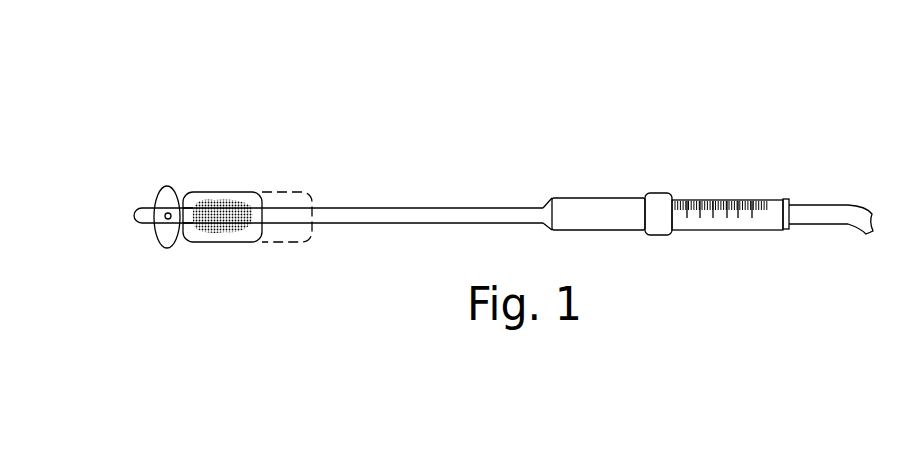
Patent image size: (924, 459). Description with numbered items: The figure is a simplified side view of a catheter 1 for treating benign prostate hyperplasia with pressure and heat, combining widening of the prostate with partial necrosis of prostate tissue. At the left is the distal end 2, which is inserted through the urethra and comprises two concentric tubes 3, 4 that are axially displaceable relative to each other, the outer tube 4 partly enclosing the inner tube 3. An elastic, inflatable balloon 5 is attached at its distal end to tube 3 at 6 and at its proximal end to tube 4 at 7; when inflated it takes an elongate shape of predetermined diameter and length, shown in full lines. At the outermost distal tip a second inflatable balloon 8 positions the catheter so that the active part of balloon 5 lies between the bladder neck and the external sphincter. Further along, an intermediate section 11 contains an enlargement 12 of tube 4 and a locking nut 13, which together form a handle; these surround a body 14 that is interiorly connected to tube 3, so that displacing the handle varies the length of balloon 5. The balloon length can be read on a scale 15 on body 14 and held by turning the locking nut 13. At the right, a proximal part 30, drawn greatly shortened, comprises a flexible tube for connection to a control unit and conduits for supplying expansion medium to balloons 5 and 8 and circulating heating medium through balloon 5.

The catheter 1 is at (452, 143).
The distal end 2 is at (227, 167).
The tube 3 is at (202, 203).
The tube 4 is at (331, 207).
The elastic inflatable balloon 5 is at (223, 243).
The distal attachment point 6 is at (187, 242).
The proximal attachment point 7 is at (265, 243).
The second inflatable balloon 8 is at (158, 246).
The intermediate section 11 is at (665, 147).
The enlargement 12 is at (612, 198).
The locking nut 13 is at (658, 236).
The body 14 is at (732, 230).
The scale 15 is at (724, 200).
The proximal part 30 is at (832, 140).